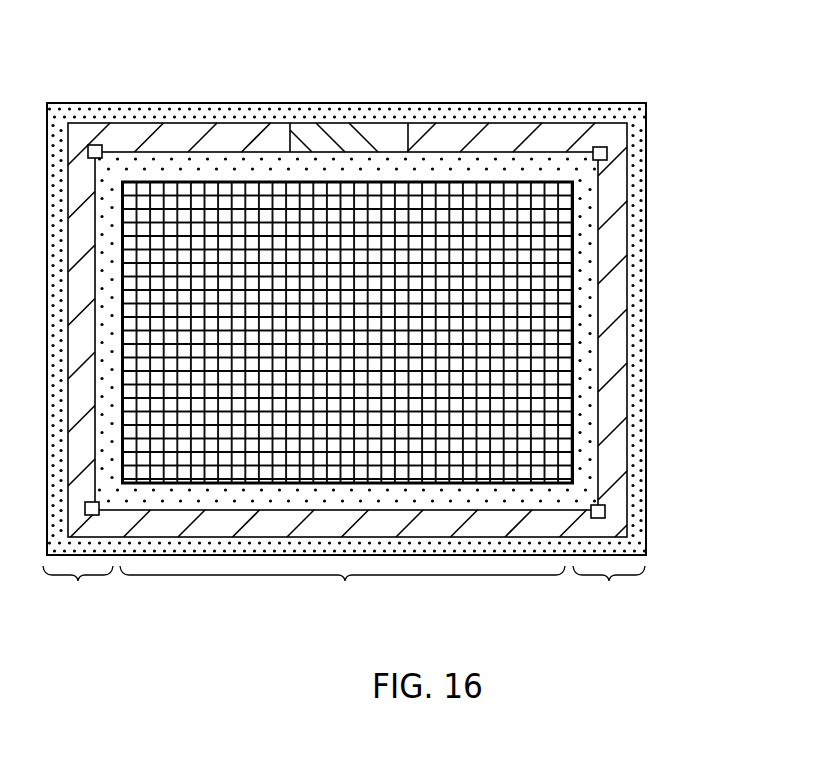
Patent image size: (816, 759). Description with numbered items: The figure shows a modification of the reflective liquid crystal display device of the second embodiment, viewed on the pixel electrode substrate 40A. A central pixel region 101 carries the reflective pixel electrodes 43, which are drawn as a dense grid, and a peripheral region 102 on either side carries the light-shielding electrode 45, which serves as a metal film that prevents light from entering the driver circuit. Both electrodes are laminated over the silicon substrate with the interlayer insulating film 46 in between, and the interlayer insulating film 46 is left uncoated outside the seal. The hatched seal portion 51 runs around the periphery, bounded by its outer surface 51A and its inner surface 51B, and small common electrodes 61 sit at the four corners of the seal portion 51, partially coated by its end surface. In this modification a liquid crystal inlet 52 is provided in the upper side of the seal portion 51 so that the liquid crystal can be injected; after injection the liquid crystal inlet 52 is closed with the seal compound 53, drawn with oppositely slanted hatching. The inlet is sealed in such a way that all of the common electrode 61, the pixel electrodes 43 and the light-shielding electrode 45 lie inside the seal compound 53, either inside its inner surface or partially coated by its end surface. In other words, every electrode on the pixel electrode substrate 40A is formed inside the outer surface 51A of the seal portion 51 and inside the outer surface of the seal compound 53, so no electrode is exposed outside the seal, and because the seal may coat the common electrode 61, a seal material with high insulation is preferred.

The pixel electrode substrate 40A is at (557, 107).
The reflective pixel electrode 43 is at (187, 194).
The light-shielding electrode 45 is at (583, 400).
The interlayer insulating film 46 is at (640, 350).
The seal portion 51 is at (621, 251).
The outer surface of the seal portion 51A is at (628, 282).
The inner surface of the seal portion 51B is at (601, 315).
The liquid crystal inlet 52 is at (395, 126).
The seal compound 53 is at (337, 138).
The common electrode 61 is at (604, 150).
The pixel region 101 is at (342, 593).
The peripheral region 102 is at (344, 592).